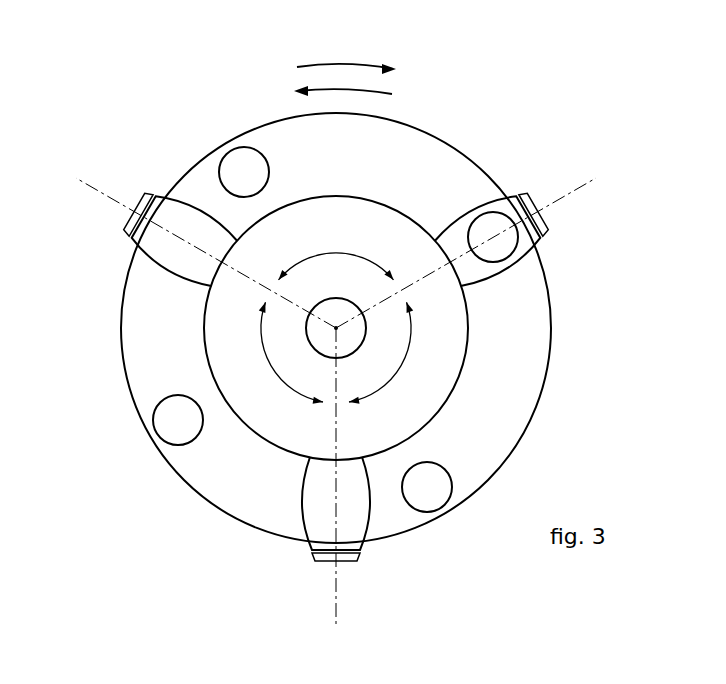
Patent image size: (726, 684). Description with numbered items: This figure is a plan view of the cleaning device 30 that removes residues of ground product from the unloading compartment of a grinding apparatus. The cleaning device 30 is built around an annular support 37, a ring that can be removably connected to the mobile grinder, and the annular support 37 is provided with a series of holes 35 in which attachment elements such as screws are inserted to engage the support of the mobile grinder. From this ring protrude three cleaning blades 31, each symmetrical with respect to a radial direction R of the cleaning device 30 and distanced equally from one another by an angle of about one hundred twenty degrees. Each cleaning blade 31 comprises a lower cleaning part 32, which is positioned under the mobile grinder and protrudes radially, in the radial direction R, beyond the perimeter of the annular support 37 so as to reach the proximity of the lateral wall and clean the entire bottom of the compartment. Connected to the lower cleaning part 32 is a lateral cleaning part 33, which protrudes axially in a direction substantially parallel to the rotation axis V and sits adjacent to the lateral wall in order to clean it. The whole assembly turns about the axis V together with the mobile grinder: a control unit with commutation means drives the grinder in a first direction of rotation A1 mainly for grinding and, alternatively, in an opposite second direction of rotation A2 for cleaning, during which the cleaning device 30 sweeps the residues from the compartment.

The cleaning device 30 is at (203, 128).
The cleaning blade 31 is at (343, 361).
The lower cleaning part 32 is at (178, 222).
The lateral cleaning part 33 is at (158, 268).
The holes 35 is at (236, 195).
The annular support 37 is at (505, 400).
The radial direction R is at (89, 187).
The rotation axis V is at (336, 328).
The first direction of rotation A1 is at (350, 63).
The second direction of rotation A2 is at (373, 91).